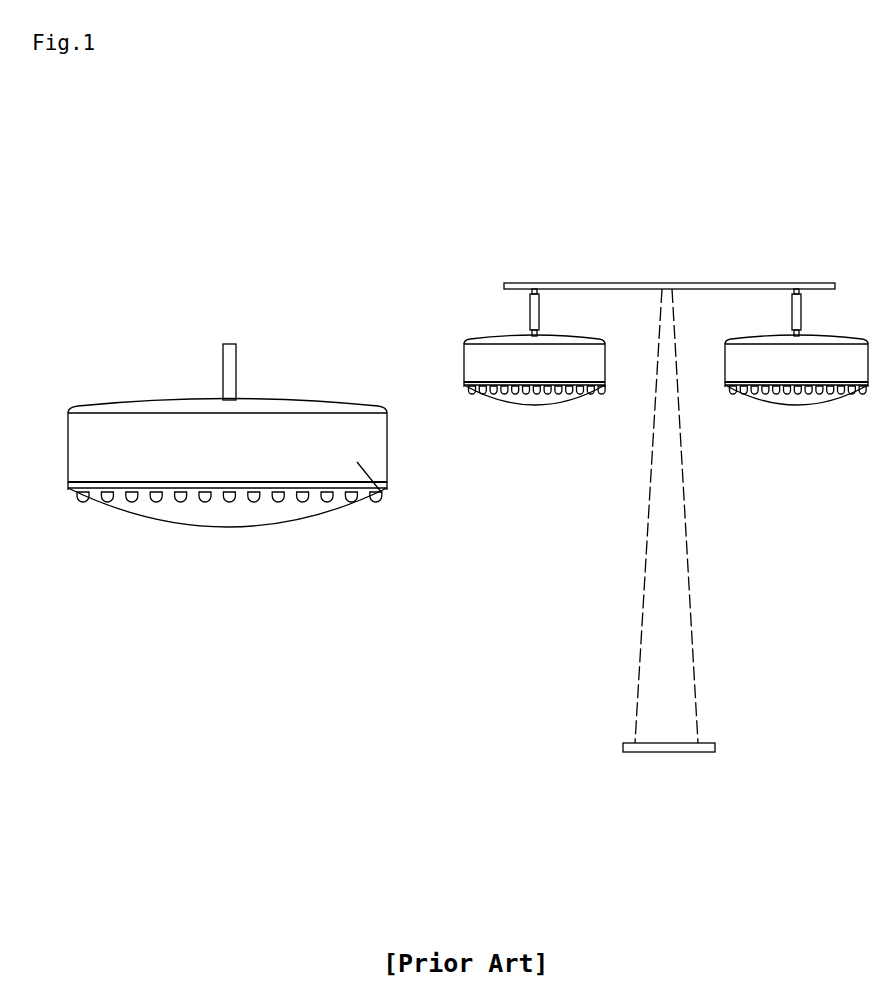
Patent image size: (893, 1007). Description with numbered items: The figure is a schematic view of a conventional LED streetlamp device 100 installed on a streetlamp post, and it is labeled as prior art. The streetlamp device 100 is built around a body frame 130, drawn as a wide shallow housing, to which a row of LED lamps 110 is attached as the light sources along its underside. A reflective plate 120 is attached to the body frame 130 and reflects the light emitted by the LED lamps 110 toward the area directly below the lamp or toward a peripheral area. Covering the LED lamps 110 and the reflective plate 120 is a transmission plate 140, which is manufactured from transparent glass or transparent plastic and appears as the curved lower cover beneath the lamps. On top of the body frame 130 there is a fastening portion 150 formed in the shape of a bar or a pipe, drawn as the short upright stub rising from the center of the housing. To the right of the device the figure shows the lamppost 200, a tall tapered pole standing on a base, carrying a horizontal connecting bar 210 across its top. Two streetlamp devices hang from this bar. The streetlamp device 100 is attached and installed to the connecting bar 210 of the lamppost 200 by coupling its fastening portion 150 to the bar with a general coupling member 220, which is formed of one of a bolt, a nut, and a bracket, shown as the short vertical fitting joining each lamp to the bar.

The LED streetlamp device 100 is at (258, 454).
The LED lamps 110 is at (337, 493).
The reflective plate 120 is at (343, 488).
The body frame 130 is at (387, 500).
The transmission plate 140 is at (212, 527).
The fastening portion 150 is at (228, 372).
The lamppost 200 is at (683, 483).
The connecting bar 210 is at (537, 292).
The coupling member 220 is at (532, 317).